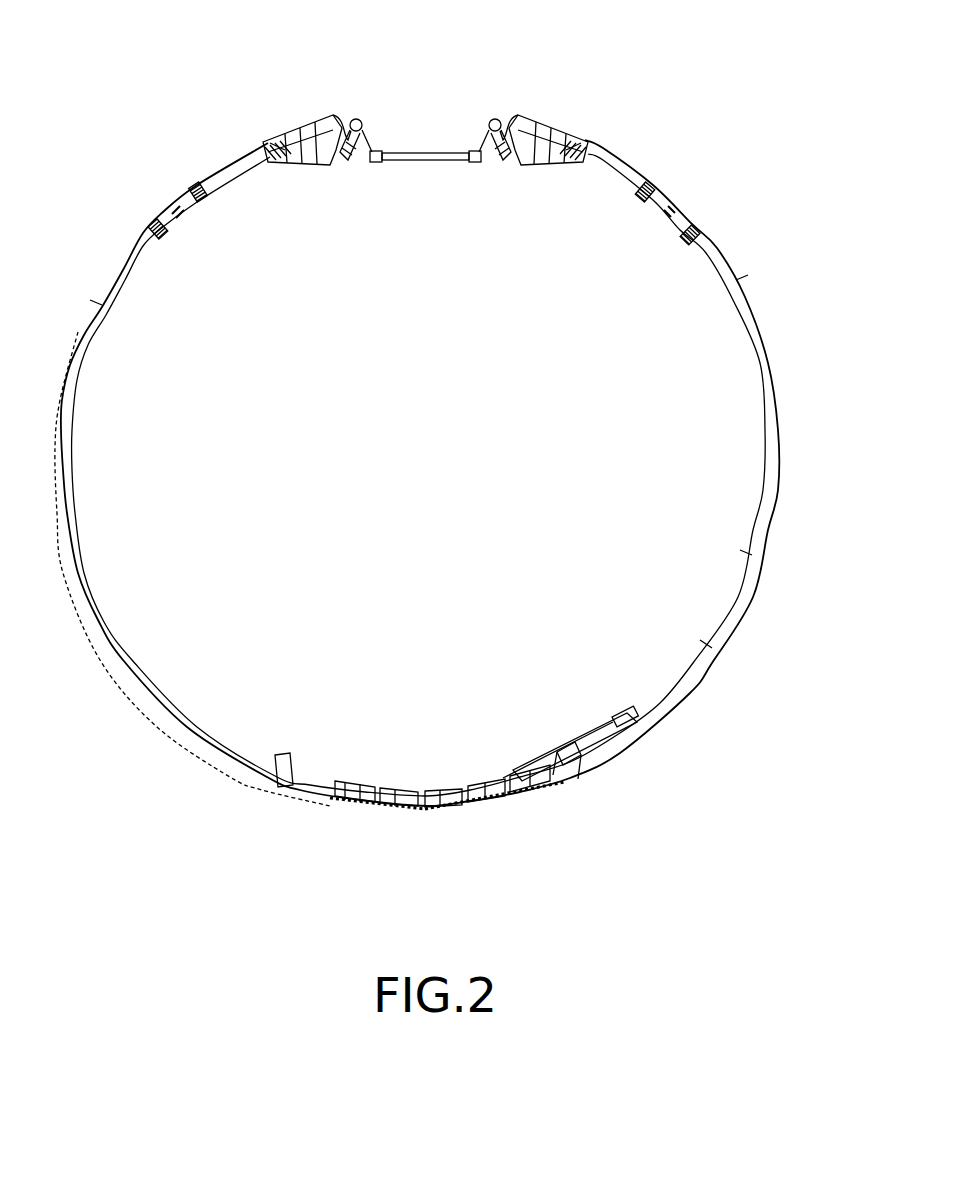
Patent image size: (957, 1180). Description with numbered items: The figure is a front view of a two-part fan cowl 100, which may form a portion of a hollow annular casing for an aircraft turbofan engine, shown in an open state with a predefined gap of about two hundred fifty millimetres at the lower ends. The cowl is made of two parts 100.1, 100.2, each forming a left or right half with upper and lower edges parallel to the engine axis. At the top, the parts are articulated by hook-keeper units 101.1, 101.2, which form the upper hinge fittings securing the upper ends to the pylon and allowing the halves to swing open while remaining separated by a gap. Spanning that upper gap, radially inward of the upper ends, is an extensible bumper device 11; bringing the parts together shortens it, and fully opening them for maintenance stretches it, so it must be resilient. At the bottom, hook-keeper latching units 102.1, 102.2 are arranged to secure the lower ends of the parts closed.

The two-part fan cowl 100 is at (240, 36).
The part of the two-part fan cowl 100.1 is at (175, 815).
The part of the two-part fan cowl 100.2 is at (645, 805).
The extensible bumper device 11 is at (417, 152).
The hook-keeper unit 101.1 is at (322, 204).
The hook-keeper unit 101.2 is at (522, 210).
The hook-keeper unit of the latching units 102.1 is at (385, 843).
The hook-keeper unit of the latching units 102.2 is at (485, 843).